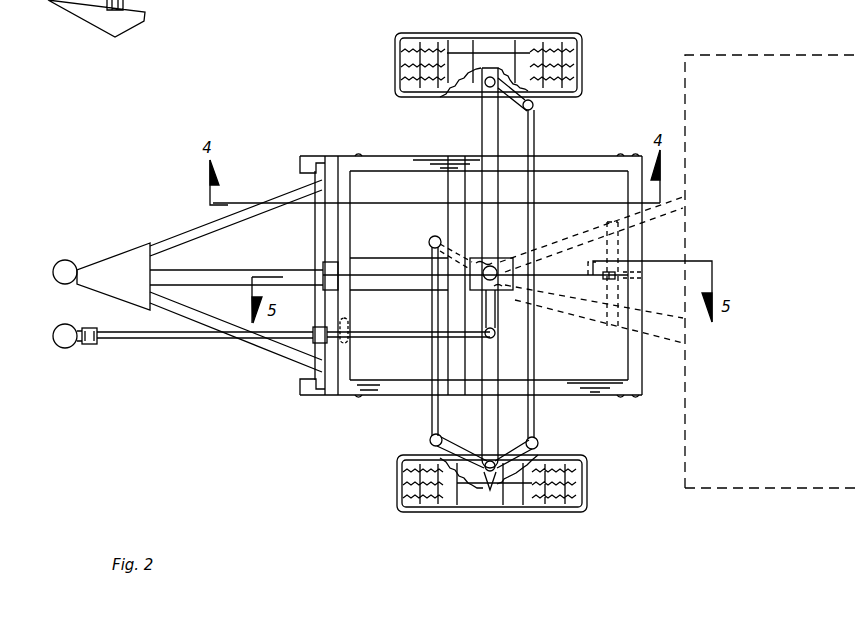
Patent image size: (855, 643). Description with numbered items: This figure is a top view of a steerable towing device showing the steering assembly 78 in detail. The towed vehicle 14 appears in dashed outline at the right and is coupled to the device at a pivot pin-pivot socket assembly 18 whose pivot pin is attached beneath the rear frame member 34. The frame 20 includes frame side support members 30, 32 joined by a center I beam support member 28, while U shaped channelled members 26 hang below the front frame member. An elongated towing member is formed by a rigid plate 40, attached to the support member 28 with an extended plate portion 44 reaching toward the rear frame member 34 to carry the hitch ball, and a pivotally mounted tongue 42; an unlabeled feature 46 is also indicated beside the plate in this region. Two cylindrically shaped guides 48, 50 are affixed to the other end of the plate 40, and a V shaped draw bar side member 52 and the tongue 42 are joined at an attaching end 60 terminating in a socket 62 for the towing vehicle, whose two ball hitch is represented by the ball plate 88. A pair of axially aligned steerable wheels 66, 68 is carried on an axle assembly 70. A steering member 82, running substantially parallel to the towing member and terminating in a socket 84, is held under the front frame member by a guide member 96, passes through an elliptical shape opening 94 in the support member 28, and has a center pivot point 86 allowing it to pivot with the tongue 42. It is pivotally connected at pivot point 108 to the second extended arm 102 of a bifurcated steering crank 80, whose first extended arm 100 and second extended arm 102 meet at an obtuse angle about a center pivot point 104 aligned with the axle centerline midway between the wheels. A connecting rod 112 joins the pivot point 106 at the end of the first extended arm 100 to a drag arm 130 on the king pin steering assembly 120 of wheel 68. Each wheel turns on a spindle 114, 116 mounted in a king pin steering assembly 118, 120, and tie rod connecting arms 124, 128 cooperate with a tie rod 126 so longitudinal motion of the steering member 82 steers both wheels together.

The towed vehicle 14 is at (706, 49).
The pivot pin-pivot socket assembly 18 is at (612, 275).
The frame 20 is at (645, 403).
The U shaped channelled members 26 is at (303, 155).
The center I beam support member 28 is at (462, 362).
The frame side support member 30 is at (387, 160).
The frame side support member 32 is at (383, 388).
The rear frame member 34 is at (635, 363).
The rigid plate 40 is at (368, 266).
The tongue 42 is at (193, 270).
The extended plate portion 44 is at (492, 277).
The alternate hitch position 46 is at (594, 204).
The cylindrically shaped guide 48 is at (321, 228).
The cylindrically shaped guide 50 is at (320, 310).
The draw bar side member 52 is at (208, 225).
The attaching end 60 is at (122, 272).
The socket 62 is at (65, 272).
The steerable wheel 66 is at (580, 38).
The steerable wheel 68 is at (513, 518).
The axle assembly 70 is at (490, 128).
The steering assembly 78 is at (428, 362).
The bifurcated steering crank 80 is at (473, 252).
The steering member 82 is at (110, 340).
The socket 84 is at (65, 345).
The center pivot point 86 is at (315, 350).
The ball plate 88 is at (82, 15).
The elliptical shape opening 94 is at (437, 342).
The guide member 96 is at (350, 327).
The first extended arm 100 is at (441, 228).
The second extended arm 102 is at (496, 313).
The center pivot point 104 is at (497, 282).
The pivot point 106 is at (431, 237).
The pivot point 108 is at (497, 337).
The connecting rod 112 is at (433, 423).
The spindle 114 is at (470, 94).
The spindle 116 is at (493, 480).
The king pin steering assembly 118 is at (480, 104).
The king pin steering assembly 120 is at (507, 480).
The tie rod connecting arm 124 is at (533, 110).
The tie rod 126 is at (538, 417).
The tie rod connecting arm 128 is at (580, 503).
The drag arm 130 is at (462, 458).